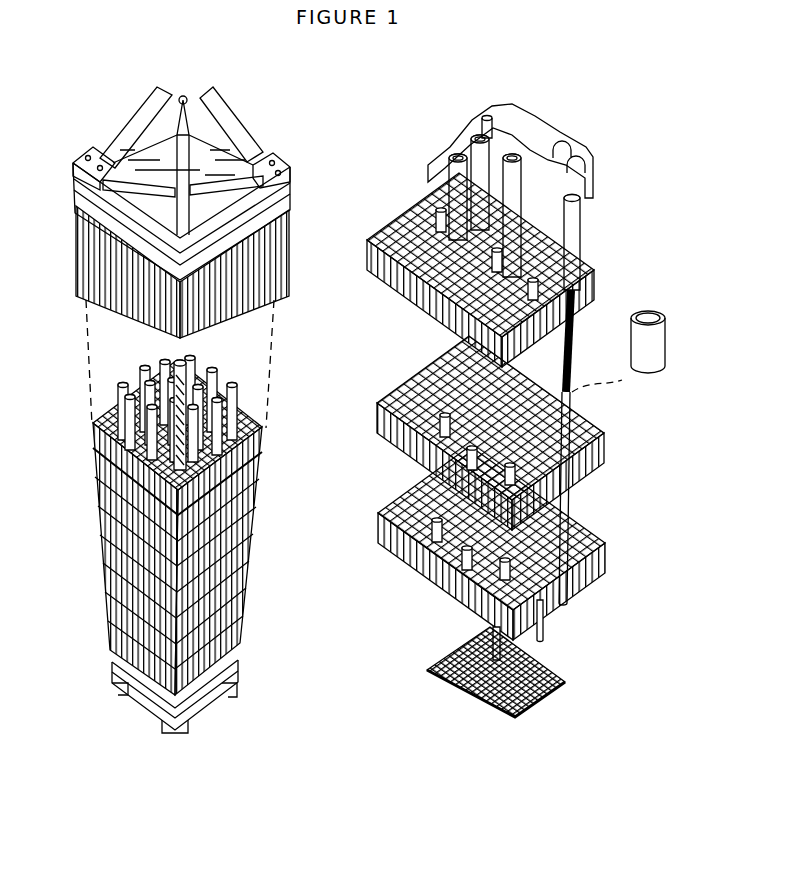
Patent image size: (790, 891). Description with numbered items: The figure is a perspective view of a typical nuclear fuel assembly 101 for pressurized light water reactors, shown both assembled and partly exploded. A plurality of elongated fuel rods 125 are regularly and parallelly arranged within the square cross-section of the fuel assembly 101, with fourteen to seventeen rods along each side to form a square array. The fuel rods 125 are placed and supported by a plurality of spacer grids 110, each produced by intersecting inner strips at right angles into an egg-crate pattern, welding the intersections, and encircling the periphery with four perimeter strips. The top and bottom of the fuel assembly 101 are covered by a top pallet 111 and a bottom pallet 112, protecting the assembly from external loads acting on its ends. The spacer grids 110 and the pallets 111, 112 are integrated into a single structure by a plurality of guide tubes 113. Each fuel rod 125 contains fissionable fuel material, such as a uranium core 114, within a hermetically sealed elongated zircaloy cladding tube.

The fuel assembly 101 is at (100, 580).
The spacer grid 110 is at (378, 403).
The top pallet 111 is at (288, 192).
The bottom pallet 112 is at (242, 700).
The guide tube 113 is at (122, 391).
The uranium core 114 is at (628, 312).
The fuel rod 125 is at (276, 240).